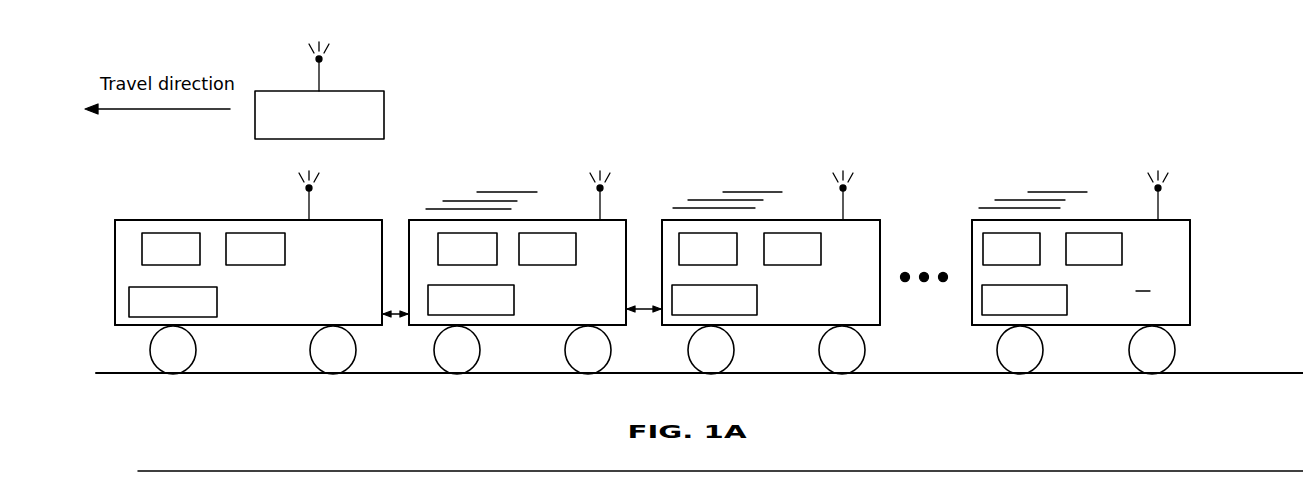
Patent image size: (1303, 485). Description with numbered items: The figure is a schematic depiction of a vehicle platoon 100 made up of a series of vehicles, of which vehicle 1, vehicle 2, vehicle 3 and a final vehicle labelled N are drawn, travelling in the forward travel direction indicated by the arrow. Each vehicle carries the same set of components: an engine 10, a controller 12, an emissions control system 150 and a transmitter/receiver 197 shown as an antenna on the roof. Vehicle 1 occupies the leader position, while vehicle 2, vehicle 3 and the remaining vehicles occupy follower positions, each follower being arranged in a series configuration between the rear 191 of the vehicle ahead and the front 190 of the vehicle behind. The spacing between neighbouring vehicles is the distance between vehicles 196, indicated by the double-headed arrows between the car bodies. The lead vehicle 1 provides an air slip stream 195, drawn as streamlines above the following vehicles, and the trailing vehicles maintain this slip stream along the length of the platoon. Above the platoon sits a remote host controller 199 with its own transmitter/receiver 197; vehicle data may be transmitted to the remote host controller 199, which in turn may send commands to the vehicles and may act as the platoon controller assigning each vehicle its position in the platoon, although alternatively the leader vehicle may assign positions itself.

The platoon 100 is at (1212, 106).
The vehicle 1 is at (322, 295).
The vehicle 2 is at (574, 295).
The vehicle 3 is at (836, 290).
The engine 10 is at (591, 249).
The controller 12 is at (674, 249).
The emissions control system 150 is at (598, 301).
The front 190 is at (114, 219).
The rear 191 is at (383, 219).
The air slip stream 195 is at (512, 184).
The distance between vehicles 196 is at (393, 318).
The transmitter/receiver 197 is at (309, 217).
The remote host controller 199 is at (319, 115).